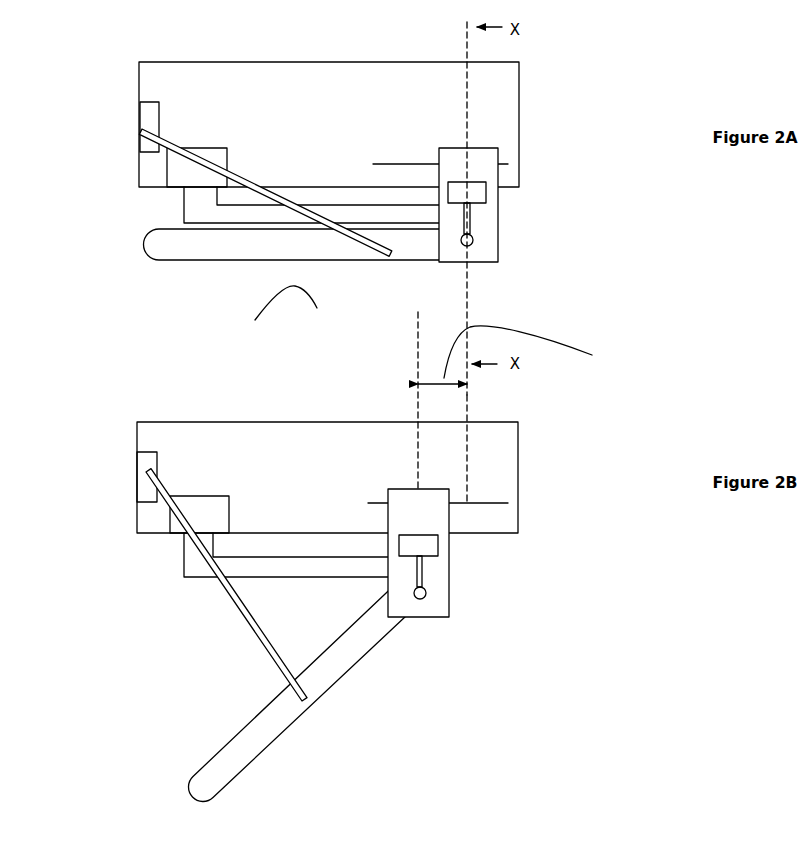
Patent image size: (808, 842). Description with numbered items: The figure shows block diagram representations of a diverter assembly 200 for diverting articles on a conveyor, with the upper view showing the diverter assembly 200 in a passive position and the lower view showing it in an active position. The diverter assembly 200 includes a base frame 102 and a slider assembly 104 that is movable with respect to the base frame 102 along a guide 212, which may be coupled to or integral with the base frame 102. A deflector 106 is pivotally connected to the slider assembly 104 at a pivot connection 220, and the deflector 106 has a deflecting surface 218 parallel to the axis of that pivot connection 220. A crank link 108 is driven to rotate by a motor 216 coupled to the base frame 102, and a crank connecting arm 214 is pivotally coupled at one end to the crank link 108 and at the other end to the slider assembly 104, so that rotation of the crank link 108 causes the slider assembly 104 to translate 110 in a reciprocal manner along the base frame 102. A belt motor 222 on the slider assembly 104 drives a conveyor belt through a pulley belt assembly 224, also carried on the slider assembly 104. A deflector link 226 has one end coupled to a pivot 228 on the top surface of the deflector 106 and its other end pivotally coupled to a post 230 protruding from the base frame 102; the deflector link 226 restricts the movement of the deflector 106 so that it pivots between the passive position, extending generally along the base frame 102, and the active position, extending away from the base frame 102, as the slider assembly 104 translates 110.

In FIG. 2A, the diverter assembly 200 is at (86, 113).
In FIG. 2B, the diverter assembly 200 is at (106, 381).
In FIG. 2A, the base frame 102 is at (357, 103).
In FIG. 2B, the base frame 102 is at (340, 457).
In FIG. 2A, the slider assembly 104 is at (454, 168).
In FIG. 2B, the slider assembly 104 is at (401, 520).
In FIG. 2A, the deflector 106 is at (281, 255).
In FIG. 2B, the deflector 106 is at (253, 733).
In FIG. 2A, the crank link 108 is at (191, 213).
In FIG. 2B, the crank link 108 is at (195, 550).
In FIG. 2A, the translation distance 110 is at (538, 352).
In FIG. 2A, the guide 212 is at (505, 163).
In FIG. 2B, the guide 212 is at (493, 500).
In FIG. 2A, the crank connecting arm 214 is at (317, 207).
In FIG. 2B, the crank connecting arm 214 is at (300, 567).
In FIG. 2A, the motor 216 is at (213, 157).
In FIG. 2B, the motor 216 is at (193, 515).
In FIG. 2A, the deflecting surface 218 is at (274, 319).
In FIG. 2A, the pivot connection 220 is at (473, 242).
In FIG. 2B, the pivot connection 220 is at (420, 593).
In FIG. 2A, the belt motor 222 is at (468, 192).
In FIG. 2B, the belt motor 222 is at (427, 548).
In FIG. 2A, the pulley belt assembly 224 is at (470, 222).
In FIG. 2B, the pulley belt assembly 224 is at (415, 573).
In FIG. 2A, the deflector link 226 is at (288, 192).
In FIG. 2B, the deflector link 226 is at (238, 615).
In FIG. 2A, the pivot 228 is at (380, 258).
In FIG. 2B, the pivot 228 is at (310, 702).
In FIG. 2A, the post 230 is at (146, 139).
In FIG. 2B, the post 230 is at (146, 468).